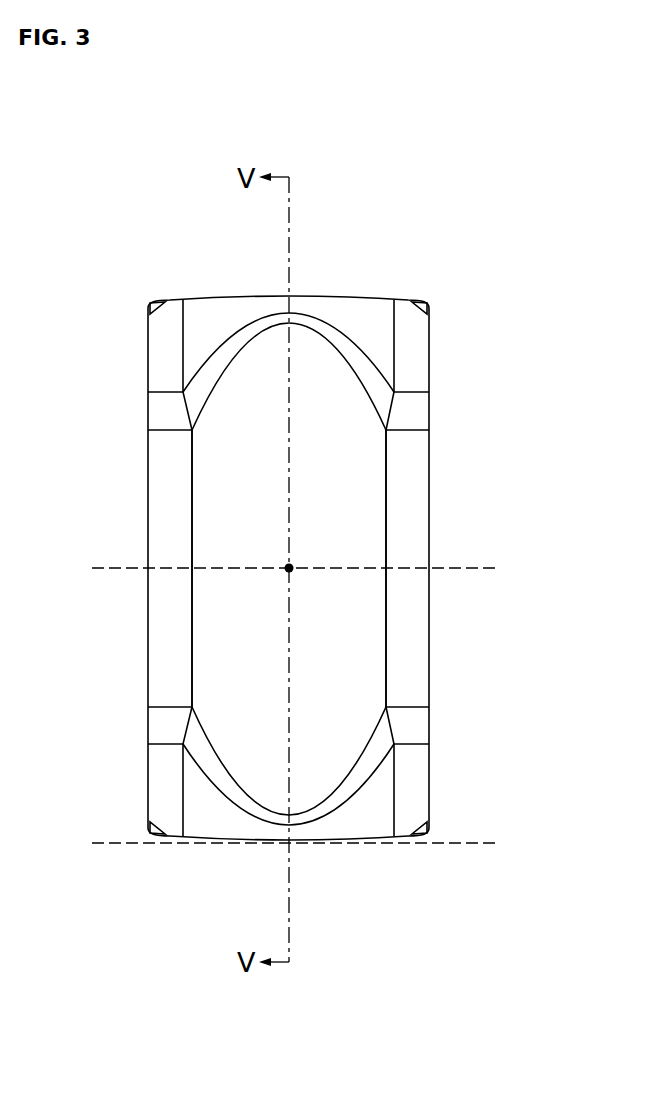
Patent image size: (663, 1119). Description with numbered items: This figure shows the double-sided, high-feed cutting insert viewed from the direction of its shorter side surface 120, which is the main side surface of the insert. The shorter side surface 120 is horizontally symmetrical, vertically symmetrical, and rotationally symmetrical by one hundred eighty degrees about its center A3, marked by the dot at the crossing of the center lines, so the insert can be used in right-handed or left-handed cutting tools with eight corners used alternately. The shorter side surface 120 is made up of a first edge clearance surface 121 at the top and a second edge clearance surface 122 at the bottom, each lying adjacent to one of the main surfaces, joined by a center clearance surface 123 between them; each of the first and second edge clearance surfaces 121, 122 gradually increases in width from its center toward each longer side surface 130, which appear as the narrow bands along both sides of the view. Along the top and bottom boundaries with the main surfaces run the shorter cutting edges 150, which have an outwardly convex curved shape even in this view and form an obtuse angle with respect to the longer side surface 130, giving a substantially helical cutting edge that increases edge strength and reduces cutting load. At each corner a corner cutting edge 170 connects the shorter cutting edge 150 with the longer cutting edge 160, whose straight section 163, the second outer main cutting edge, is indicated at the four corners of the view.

The shorter side surface 120 is at (357, 569).
The first edge clearance surface 121 is at (381, 342).
The second edge clearance surface 122 is at (378, 800).
The center clearance surface 123 is at (363, 507).
The longer side surface 130 is at (148, 638).
The shorter cutting edge 150 is at (330, 297).
The longer cutting edge 160 is at (293, 582).
The straight section 163 is at (150, 302).
The corner cutting edge 170 is at (172, 300).
The center of the shorter side surface A3 is at (289, 568).